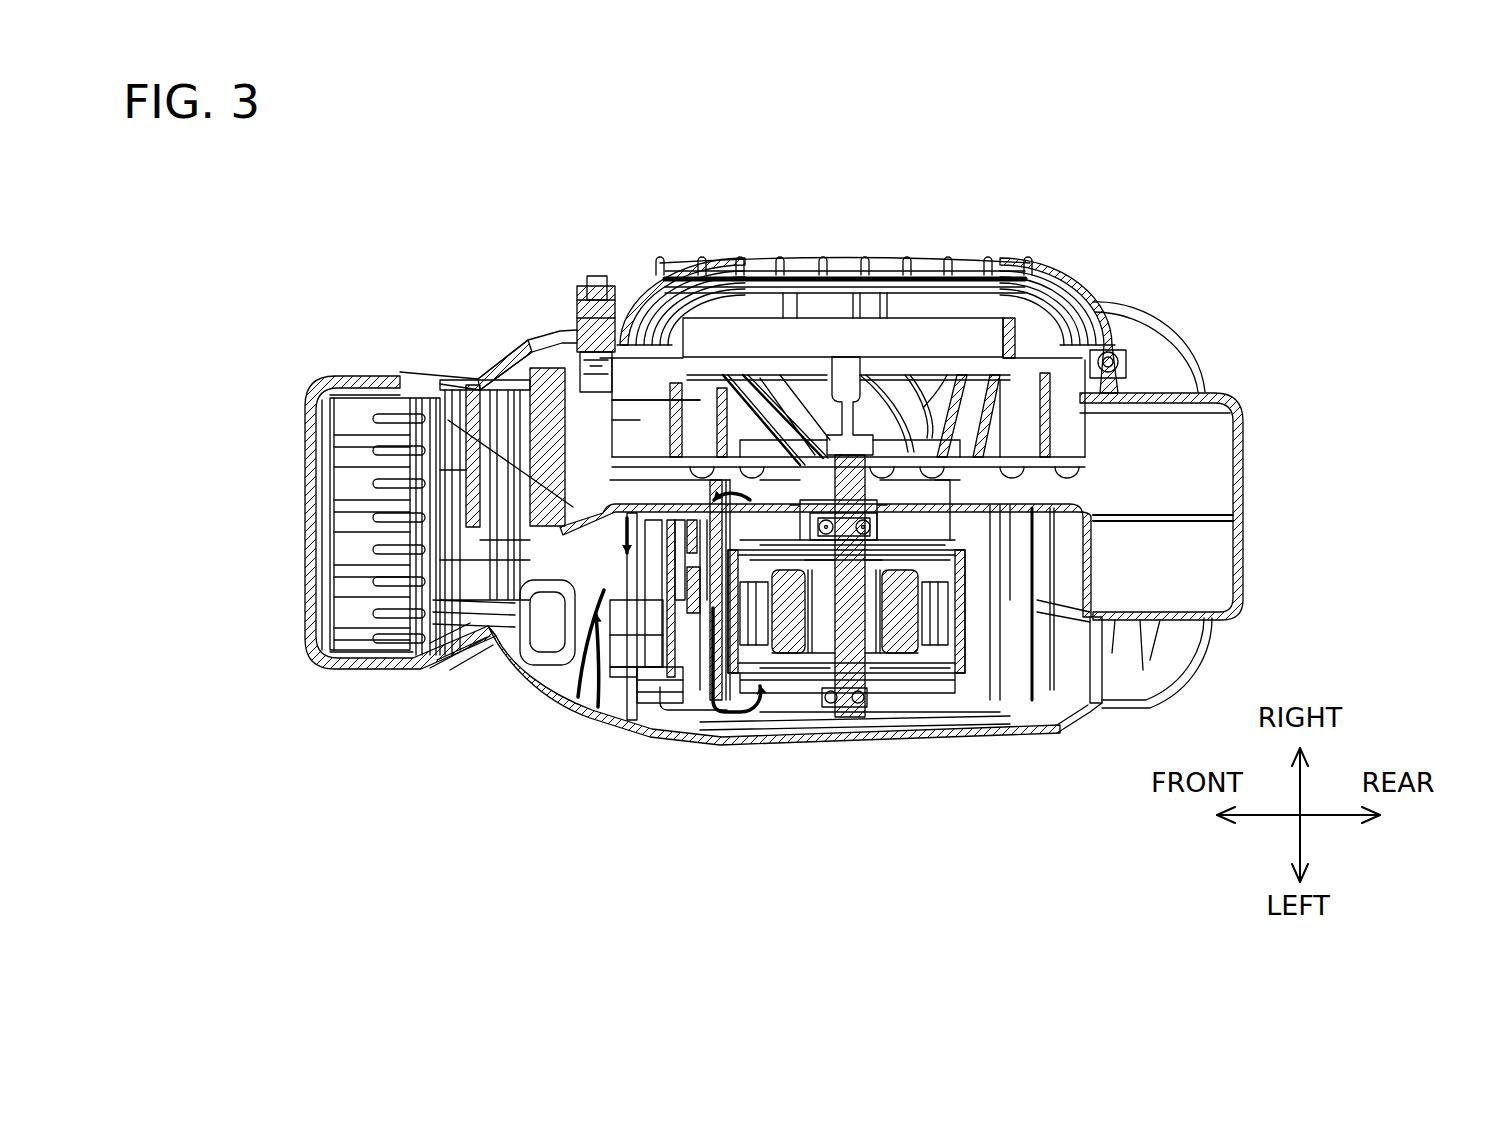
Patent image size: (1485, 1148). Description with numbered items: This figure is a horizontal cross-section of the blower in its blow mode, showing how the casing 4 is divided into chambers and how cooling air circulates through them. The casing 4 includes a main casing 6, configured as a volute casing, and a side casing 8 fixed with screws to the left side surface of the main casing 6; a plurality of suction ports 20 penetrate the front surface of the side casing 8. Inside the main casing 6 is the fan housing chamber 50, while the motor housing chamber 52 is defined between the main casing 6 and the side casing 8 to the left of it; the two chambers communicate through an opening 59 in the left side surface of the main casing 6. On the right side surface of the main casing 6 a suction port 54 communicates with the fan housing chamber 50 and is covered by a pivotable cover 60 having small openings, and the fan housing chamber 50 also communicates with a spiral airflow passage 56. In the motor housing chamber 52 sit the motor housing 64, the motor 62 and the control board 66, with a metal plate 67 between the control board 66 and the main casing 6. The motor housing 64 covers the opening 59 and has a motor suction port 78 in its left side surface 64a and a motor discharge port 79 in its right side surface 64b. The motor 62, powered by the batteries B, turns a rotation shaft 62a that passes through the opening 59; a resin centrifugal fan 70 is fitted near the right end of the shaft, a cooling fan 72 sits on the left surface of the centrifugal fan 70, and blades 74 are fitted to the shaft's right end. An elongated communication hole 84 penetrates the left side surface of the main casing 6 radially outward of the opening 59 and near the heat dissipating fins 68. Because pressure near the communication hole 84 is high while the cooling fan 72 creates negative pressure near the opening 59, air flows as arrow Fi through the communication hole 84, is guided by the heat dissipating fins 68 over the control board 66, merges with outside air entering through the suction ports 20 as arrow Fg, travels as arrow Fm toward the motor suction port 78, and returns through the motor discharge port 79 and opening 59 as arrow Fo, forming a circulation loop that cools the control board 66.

The casing 4 is at (1258, 400).
The main casing 6 is at (1105, 555).
The side casing 8 is at (1030, 670).
The suction ports 20 is at (420, 660).
The fan housing chamber 50 is at (608, 300).
The motor housing chamber 52 is at (795, 690).
The suction port 54 is at (683, 275).
The airflow passage 56 is at (1196, 451).
The opening 59 is at (727, 375).
The cover 60 is at (1113, 323).
The motor 62 is at (955, 680).
The rotation shaft 62a is at (790, 440).
The motor housing 64 is at (1030, 680).
The left side surface 64a is at (770, 718).
The right side surface 64b is at (907, 380).
The control board 66 is at (432, 580).
The metal plate 67 is at (660, 690).
The heat dissipating fins 68 is at (618, 678).
The centrifugal fan 70 is at (672, 395).
The cooling fan 72 is at (648, 322).
The blades 74 is at (838, 400).
The motor suction port 78 is at (768, 680).
The motor discharge port 79 is at (943, 388).
The communication hole 84 is at (572, 378).
The batteries B is at (306, 478).
The arrow Fi is at (425, 378).
The arrow Fo is at (646, 424).
The arrow Fm is at (753, 708).
The arrow Fg is at (593, 620).